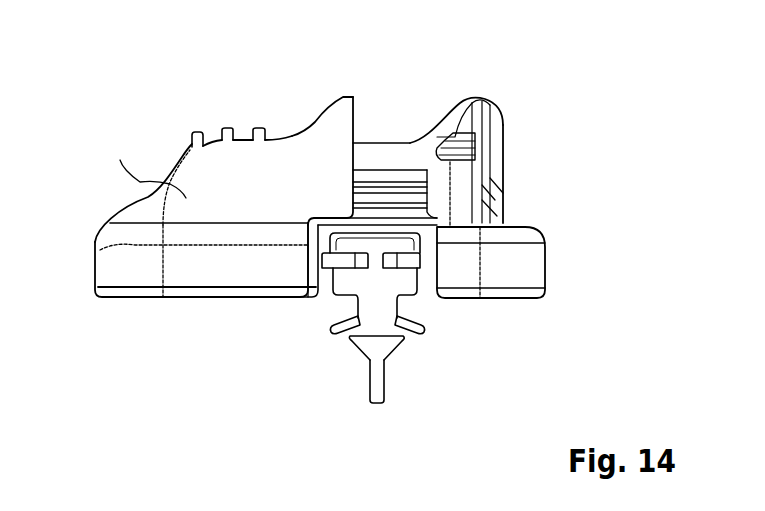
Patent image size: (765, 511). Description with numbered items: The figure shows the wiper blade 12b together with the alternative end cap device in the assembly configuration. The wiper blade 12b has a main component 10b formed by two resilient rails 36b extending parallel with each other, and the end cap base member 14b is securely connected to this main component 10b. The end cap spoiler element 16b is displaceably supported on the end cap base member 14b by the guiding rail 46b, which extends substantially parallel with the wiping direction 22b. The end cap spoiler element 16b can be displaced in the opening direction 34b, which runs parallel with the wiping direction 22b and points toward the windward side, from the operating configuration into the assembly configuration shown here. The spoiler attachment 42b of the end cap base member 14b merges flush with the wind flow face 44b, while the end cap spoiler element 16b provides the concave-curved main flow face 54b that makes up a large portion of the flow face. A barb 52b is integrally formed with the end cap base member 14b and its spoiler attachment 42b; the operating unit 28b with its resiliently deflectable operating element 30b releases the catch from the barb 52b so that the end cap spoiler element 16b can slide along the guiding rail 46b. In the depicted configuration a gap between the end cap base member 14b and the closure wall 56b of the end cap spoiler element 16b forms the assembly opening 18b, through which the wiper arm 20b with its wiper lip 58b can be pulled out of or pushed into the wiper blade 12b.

The main component 10b is at (429, 302).
The wiper blade 12b is at (345, 357).
The end cap base member 14b is at (520, 226).
The end cap spoiler element 16b is at (137, 193).
The assembly opening 18b is at (320, 297).
The wiper arm 20b is at (383, 343).
The wiping direction 22b is at (557, 317).
The operating unit 28b is at (190, 130).
The operating element 30b is at (261, 128).
The opening direction 34b is at (80, 272).
The resilient rails 36b is at (318, 290).
The spoiler attachment 42b is at (465, 112).
The wind flow face 44b is at (417, 137).
The guiding rail 46b is at (383, 184).
The barb 52b is at (442, 150).
The main flow face 54b is at (304, 133).
The closure wall 56b is at (198, 279).
The wiper lip 58b is at (383, 402).